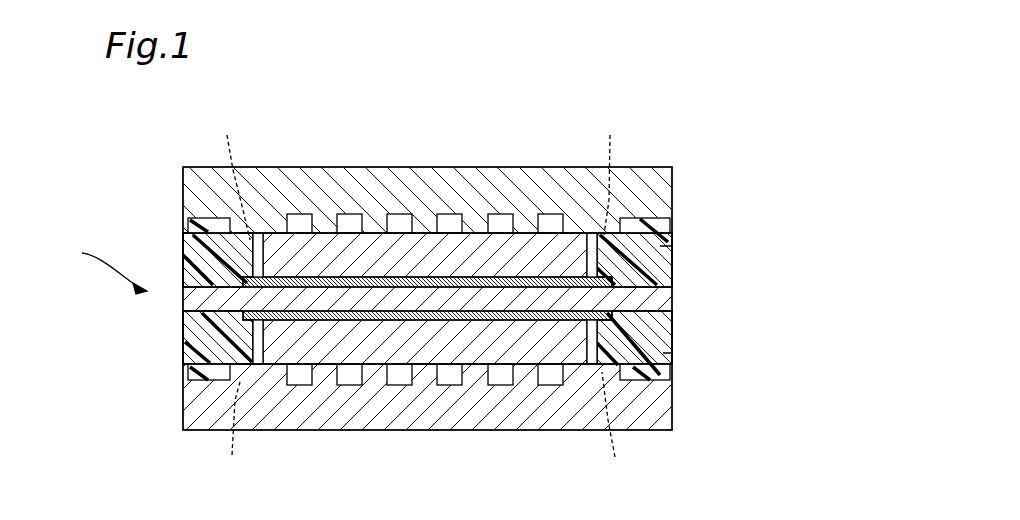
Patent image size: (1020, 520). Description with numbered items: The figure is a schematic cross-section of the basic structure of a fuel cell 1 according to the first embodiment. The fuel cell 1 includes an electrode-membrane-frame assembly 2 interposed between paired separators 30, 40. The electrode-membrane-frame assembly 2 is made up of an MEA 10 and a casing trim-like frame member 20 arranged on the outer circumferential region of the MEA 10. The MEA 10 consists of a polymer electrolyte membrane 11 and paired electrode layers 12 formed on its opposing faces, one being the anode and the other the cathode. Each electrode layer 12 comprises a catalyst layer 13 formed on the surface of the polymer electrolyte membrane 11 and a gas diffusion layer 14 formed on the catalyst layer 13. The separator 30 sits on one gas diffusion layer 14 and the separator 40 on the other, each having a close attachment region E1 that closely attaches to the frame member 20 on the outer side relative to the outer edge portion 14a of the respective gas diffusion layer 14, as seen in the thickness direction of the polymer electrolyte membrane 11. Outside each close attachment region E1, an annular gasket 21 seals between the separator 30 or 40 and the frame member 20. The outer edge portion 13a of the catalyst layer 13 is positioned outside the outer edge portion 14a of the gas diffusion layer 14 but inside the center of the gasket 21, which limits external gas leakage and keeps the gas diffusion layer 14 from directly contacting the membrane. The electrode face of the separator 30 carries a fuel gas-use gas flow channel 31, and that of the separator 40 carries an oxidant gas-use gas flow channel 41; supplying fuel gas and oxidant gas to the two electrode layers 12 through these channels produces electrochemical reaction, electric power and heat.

The fuel cell 1 is at (155, 128).
The electrode-membrane-frame assembly 2 is at (105, 268).
The MEA 10 is at (778, 228).
The polymer electrolyte membrane 11 is at (672, 302).
The electrode layer 12 is at (735, 227).
The catalyst layer 13 is at (567, 253).
The outer edge portion of the catalyst layer 13a is at (650, 283).
The gas diffusion layer 14 is at (660, 246).
The outer edge portion of the gas diffusion layer 14a is at (258, 234).
The frame member 20 is at (668, 242).
The gasket 21 is at (662, 225).
The separator 30 is at (672, 185).
The fuel gas-use gas flow channel 31 is at (345, 214).
The separator 40 is at (660, 397).
The oxidant gas-use gas flow channel 41 is at (345, 386).
The close attachment region E1 is at (424, 298).